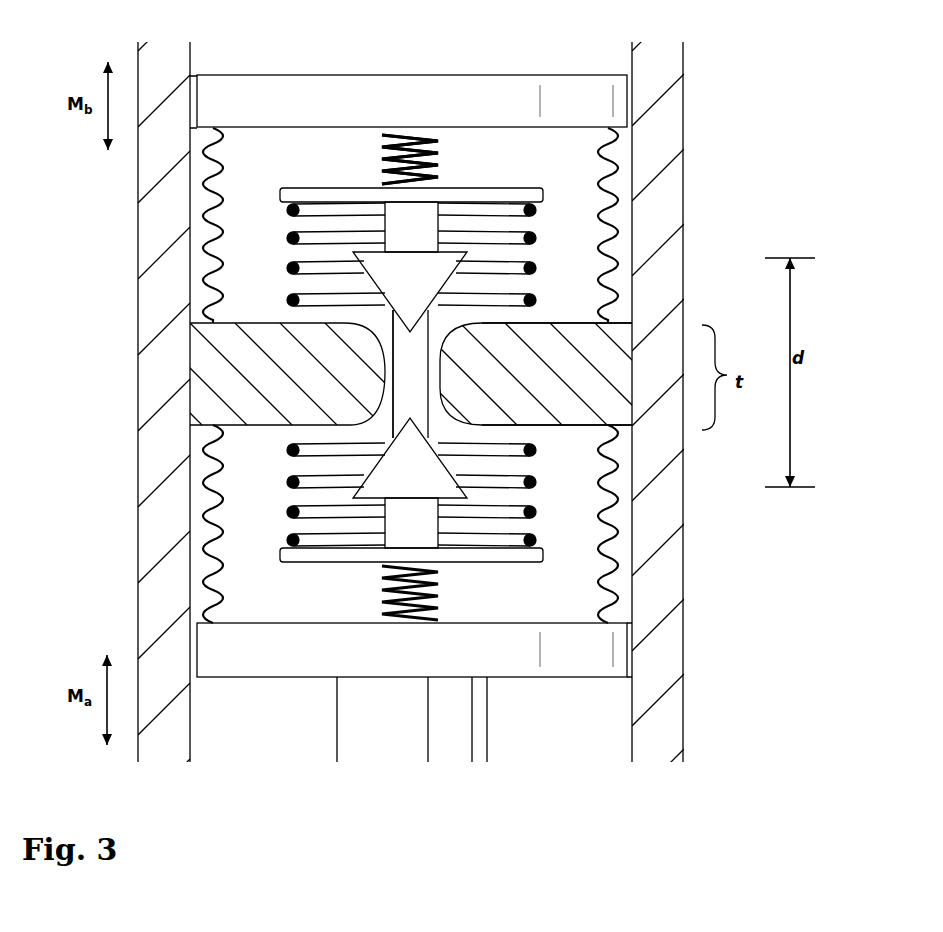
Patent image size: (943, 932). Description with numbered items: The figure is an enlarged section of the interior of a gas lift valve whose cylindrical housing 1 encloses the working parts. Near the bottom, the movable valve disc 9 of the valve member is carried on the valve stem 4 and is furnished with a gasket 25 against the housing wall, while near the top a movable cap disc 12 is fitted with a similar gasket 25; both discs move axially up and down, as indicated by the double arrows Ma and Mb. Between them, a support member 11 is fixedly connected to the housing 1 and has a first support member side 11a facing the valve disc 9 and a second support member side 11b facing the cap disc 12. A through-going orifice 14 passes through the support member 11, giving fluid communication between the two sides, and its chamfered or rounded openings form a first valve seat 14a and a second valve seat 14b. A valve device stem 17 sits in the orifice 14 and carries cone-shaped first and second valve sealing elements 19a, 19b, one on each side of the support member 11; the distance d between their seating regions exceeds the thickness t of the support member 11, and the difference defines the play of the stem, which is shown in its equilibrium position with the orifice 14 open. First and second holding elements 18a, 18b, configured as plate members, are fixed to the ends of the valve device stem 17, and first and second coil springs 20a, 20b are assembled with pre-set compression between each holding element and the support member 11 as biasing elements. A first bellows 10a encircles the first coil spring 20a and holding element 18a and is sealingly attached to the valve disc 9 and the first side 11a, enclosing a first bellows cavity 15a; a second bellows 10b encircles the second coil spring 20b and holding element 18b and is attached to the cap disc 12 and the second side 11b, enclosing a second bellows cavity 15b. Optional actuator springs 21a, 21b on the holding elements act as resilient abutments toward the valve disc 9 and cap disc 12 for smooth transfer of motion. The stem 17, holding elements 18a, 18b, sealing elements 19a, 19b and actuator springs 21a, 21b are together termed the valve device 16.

The housing 1 is at (448, 405).
The valve stem 4 is at (358, 725).
The valve disc 9 is at (412, 679).
The first bellows 10a is at (480, 524).
The second bellows 10b is at (488, 225).
The support member 11 is at (563, 395).
The first support member side 11a is at (625, 456).
The second support member side 11b is at (628, 277).
The cap disc 12 is at (412, 74).
The orifice 14 is at (267, 413).
The first valve seat 14a is at (449, 483).
The second valve seat 14b is at (252, 304).
The first bellows cavity 15a is at (247, 565).
The second bellows cavity 15b is at (246, 250).
The valve device 16 is at (382, 103).
The valve device stem 17 is at (238, 374).
The first holding element 18a is at (531, 563).
The second holding element 18b is at (519, 203).
The first valve sealing element 19a is at (410, 458).
The second valve sealing element 19b is at (410, 292).
The first coil spring 20a is at (297, 514).
The second coil spring 20b is at (297, 268).
The first actuator spring 21a is at (321, 646).
The second actuator spring 21b is at (250, 170).
The gasket 25 is at (411, 398).